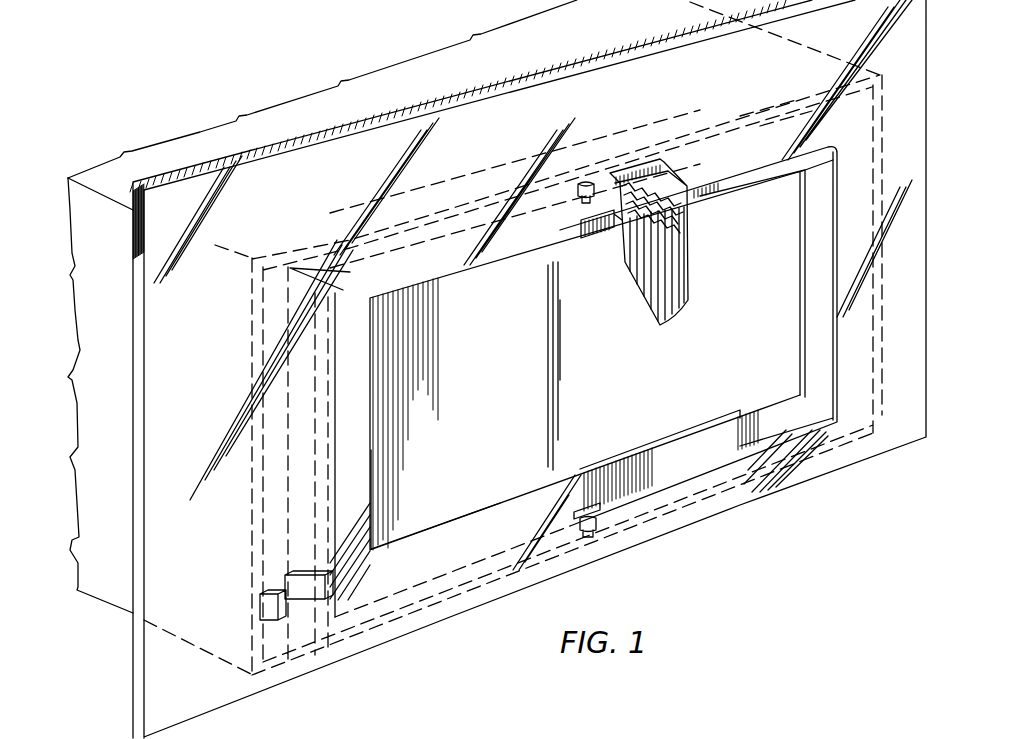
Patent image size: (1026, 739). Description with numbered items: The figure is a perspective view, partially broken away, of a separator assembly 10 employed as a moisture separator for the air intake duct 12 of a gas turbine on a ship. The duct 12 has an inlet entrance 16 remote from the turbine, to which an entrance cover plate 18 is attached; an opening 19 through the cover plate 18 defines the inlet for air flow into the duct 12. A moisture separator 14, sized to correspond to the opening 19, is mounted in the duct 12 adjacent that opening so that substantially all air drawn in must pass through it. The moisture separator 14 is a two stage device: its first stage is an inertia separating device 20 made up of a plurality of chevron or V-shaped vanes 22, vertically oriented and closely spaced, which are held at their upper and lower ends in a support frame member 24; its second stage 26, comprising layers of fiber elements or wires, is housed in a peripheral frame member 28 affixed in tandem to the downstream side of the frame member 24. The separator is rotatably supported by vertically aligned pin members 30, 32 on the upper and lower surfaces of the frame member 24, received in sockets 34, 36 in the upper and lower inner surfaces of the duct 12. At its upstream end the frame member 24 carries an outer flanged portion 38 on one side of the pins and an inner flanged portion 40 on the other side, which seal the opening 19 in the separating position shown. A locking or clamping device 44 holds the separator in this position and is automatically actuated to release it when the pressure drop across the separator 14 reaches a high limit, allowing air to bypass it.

The separator assembly 10 is at (695, 532).
The air intake duct 12 is at (263, 504).
The moisture separator 14 is at (748, 380).
The inlet entrance 16 is at (372, 380).
The entrance cover plate 18 is at (217, 683).
The opening 19 is at (433, 517).
The inertia separating device 20 is at (663, 247).
The vanes 22 is at (665, 282).
The support frame member 24 is at (800, 137).
The second stage 26 is at (785, 146).
The peripheral frame member 28 is at (757, 136).
The pin member 30 is at (578, 208).
The pin member 32 is at (597, 525).
The socket 34 is at (578, 178).
The socket 36 is at (580, 532).
The outer flanged portion 38 is at (720, 445).
The inner flanged portion 40 is at (503, 500).
The locking or clamping device 44 is at (267, 617).